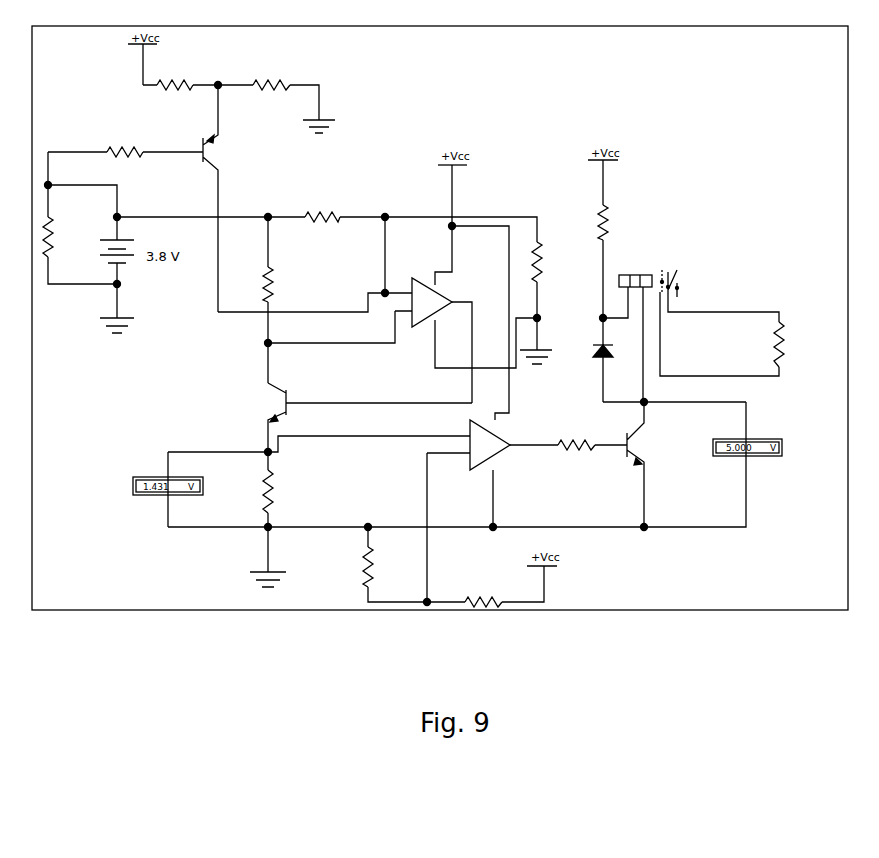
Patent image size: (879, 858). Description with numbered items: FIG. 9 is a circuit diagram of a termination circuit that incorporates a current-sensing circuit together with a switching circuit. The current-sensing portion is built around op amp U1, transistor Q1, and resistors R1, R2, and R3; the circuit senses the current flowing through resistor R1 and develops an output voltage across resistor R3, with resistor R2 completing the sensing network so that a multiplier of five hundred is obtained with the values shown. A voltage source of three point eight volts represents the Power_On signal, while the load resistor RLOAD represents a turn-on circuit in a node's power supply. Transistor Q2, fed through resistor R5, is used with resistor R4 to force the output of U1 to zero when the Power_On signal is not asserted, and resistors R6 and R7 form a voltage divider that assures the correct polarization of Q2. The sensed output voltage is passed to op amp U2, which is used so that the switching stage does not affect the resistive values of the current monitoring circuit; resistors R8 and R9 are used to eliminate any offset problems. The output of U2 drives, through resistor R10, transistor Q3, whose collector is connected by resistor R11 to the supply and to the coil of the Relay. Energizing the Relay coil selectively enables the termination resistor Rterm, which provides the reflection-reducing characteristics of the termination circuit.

The resistor R1 is at (321, 200).
The resistor R2 is at (301, 300).
The resistor R3 is at (286, 491).
The resistor R4 is at (62, 237).
The resistor R5 is at (125, 135).
The resistor R6 is at (175, 102).
The resistor R7 is at (265, 102).
The resistor R8 is at (351, 567).
The resistor R9 is at (483, 582).
The resistor R10 is at (577, 463).
The resistor R11 is at (635, 225).
The load resistor RLOAD is at (565, 262).
The termination resistor Rterm is at (722, 334).
The transistor Q1 is at (340, 417).
The transistor Q2 is at (211, 198).
The transistor Q3 is at (647, 464).
The op amp U1 is at (463, 284).
The op amp U2 is at (514, 445).
The relay Relay is at (641, 328).